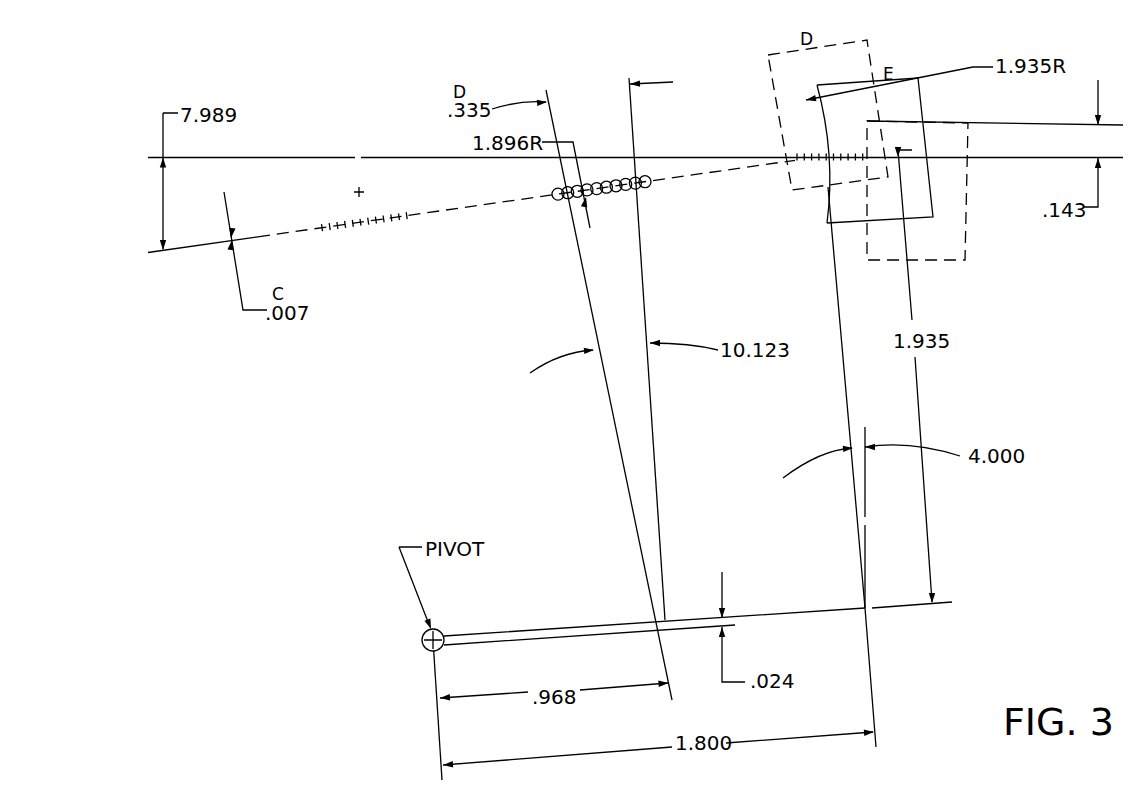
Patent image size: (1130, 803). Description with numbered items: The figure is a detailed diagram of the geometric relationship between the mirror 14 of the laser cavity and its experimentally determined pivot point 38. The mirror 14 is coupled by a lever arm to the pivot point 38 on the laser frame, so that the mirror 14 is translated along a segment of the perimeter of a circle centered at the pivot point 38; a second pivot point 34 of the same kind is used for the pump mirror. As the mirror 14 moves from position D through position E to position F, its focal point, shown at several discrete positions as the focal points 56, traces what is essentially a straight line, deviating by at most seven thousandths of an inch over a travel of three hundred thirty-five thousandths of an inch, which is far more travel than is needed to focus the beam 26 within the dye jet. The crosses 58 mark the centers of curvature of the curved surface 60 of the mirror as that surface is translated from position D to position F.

The mirror 14 is at (955, 240).
The beam 26 is at (708, 170).
The pivot point 34 is at (828, 614).
The pivot point 38 is at (437, 628).
The focal points 56 is at (637, 184).
The crosses 58 is at (343, 226).
The curved surface 60 is at (778, 87).